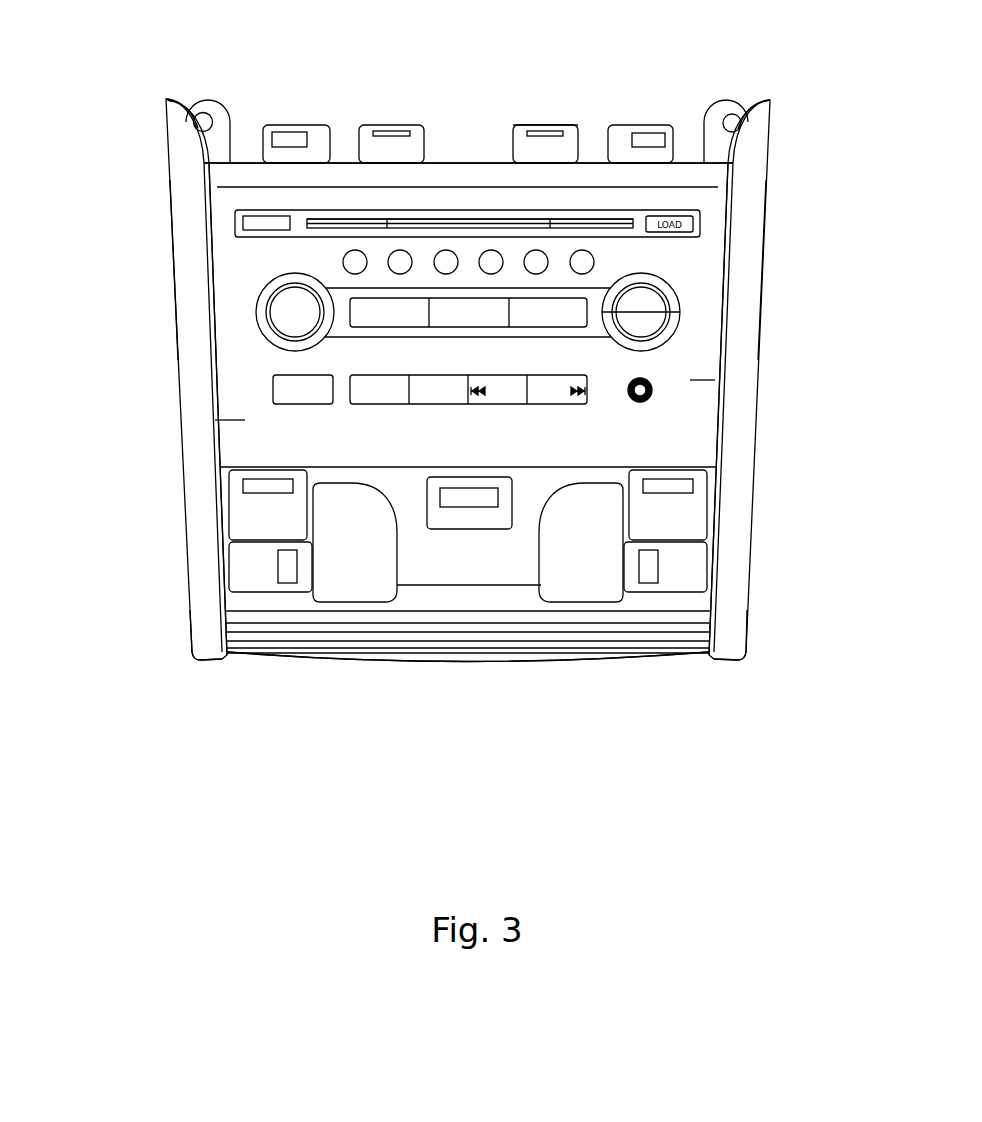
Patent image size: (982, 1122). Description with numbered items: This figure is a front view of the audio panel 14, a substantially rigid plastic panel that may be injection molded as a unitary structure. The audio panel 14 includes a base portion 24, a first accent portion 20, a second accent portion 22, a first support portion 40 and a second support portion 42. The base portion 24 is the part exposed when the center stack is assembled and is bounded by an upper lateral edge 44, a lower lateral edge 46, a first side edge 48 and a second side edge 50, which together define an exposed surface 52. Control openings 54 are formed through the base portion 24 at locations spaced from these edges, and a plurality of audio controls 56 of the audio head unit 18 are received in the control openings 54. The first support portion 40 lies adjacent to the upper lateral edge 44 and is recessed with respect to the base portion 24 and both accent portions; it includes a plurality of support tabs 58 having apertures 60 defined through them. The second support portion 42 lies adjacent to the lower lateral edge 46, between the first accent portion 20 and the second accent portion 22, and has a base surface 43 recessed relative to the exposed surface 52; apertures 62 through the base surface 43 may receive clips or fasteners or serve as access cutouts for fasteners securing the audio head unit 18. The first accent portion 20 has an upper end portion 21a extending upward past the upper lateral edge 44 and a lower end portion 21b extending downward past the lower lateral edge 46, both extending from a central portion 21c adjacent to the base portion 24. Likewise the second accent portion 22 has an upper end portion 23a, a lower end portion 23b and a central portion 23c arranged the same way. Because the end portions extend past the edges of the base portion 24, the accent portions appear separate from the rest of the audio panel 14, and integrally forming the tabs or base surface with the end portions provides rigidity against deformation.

The audio panel 14 is at (803, 84).
The audio head unit 18 is at (688, 309).
The first accent portion 20 is at (120, 297).
The upper end portion of first accent portion 21a is at (166, 127).
The lower end portion of first accent portion 21b is at (190, 637).
The central portion of first accent portion 21c is at (177, 350).
The second accent portion 22 is at (776, 226).
The upper end portion of second accent portion 23a is at (772, 123).
The lower end portion of second accent portion 23b is at (743, 651).
The central portion of second accent portion 23c is at (762, 318).
The base portion 24 is at (703, 362).
The first support portion 40 is at (577, 112).
The second support portion 42 is at (488, 684).
The base surface 43 is at (491, 571).
The upper lateral edge 44 is at (470, 163).
The lower lateral edge 46 is at (372, 467).
The first side edge 48 is at (228, 428).
The second side edge 50 is at (704, 386).
The exposed surface 52 is at (406, 448).
The control openings 54 is at (240, 220).
The audio controls 56 is at (268, 340).
The support tabs 58 is at (195, 100).
The apertures 60 is at (214, 112).
The apertures 62 is at (243, 486).